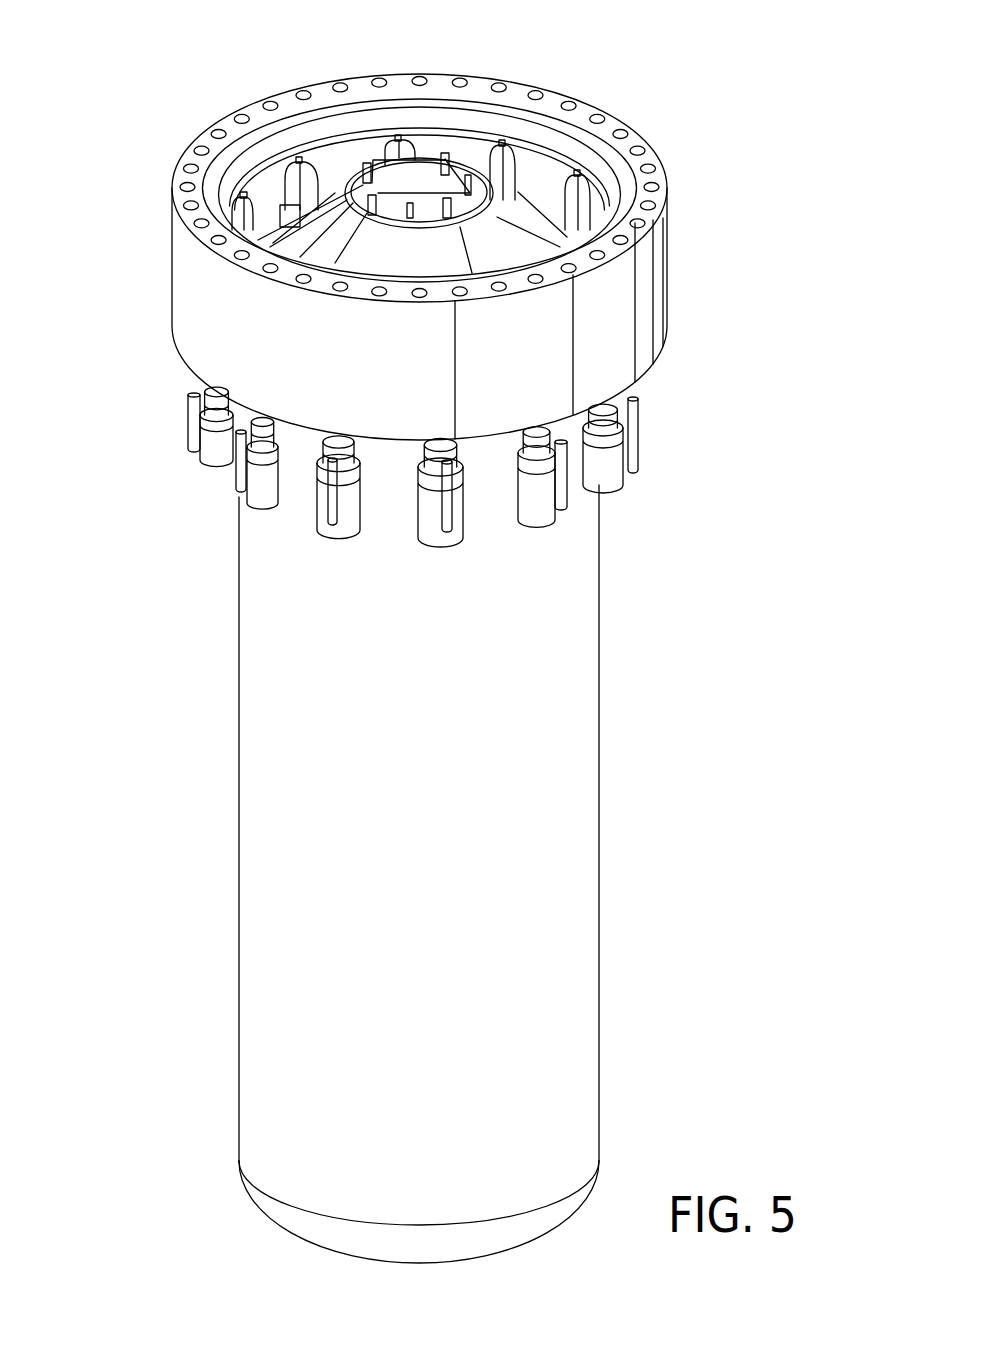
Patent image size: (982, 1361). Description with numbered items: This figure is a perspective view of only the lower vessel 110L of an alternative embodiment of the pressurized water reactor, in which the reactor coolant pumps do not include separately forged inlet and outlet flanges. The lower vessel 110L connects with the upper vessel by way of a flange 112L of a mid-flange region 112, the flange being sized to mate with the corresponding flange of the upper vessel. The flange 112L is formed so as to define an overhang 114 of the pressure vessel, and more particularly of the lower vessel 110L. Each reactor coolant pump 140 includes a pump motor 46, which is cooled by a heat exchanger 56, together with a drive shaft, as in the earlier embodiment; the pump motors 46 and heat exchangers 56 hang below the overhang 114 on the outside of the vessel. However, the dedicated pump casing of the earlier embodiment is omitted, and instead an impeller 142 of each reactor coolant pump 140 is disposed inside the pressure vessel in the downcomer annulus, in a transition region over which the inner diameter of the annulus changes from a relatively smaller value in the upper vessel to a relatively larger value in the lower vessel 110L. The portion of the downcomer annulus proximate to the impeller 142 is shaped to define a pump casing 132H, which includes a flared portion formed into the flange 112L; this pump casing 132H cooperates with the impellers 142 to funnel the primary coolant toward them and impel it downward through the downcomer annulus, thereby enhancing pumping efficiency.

The mid-flange region 112 is at (728, 76).
The flange 112L is at (645, 278).
The overhang 114 is at (668, 372).
The pump casing 132H is at (263, 193).
The impeller 142 is at (401, 138).
The reactor coolant pump 140 is at (183, 430).
The pump motor 46 is at (437, 498).
The heat exchanger 56 is at (643, 442).
The lower vessel 110L is at (535, 962).